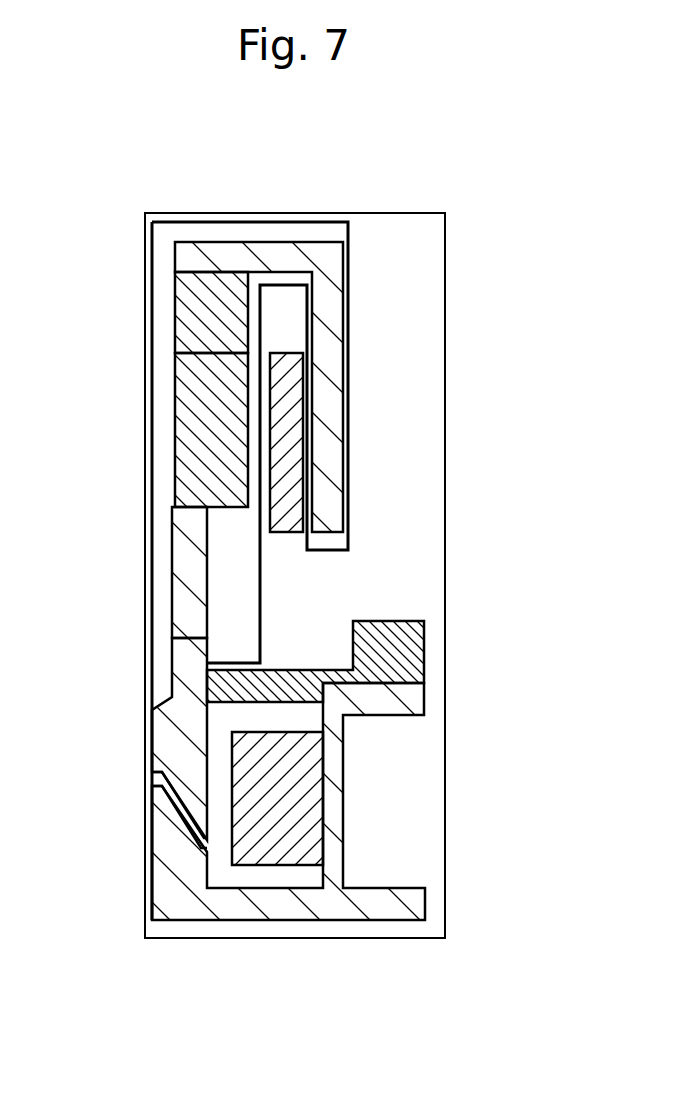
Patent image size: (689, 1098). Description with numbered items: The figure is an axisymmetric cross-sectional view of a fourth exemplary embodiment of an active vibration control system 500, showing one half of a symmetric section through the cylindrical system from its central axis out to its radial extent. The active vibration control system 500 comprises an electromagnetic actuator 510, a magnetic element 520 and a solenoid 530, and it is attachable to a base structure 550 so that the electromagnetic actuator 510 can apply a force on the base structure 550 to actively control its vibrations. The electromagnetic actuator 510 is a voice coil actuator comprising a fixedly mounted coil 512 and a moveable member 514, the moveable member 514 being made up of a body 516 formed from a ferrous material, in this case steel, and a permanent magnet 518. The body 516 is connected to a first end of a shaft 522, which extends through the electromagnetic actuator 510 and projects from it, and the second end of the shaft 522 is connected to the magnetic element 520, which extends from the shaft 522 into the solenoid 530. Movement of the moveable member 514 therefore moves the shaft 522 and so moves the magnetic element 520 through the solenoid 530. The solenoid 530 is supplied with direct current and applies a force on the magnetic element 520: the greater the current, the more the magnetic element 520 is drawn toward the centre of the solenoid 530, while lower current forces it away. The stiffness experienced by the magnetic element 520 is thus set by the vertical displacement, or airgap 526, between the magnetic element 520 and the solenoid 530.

The active vibration control system 500 is at (511, 223).
The electromagnetic actuator 510 is at (124, 269).
The fixedly mounted coil 512 is at (295, 415).
The moveable member 514 is at (154, 352).
The body 516 is at (195, 430).
The permanent magnet 518 is at (215, 287).
The magnetic element 520 is at (173, 743).
The shaft 522 is at (177, 578).
The airgap 526 is at (180, 812).
The solenoid 530 is at (275, 840).
The base structure 550 is at (173, 900).